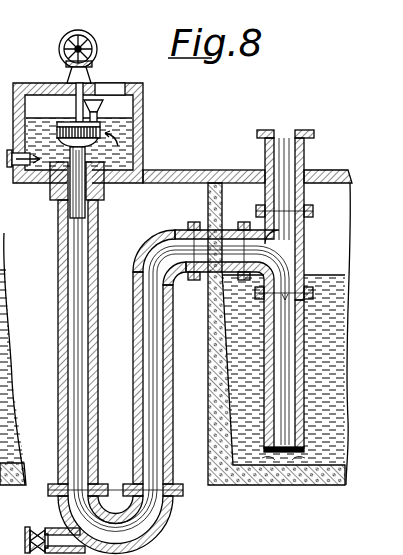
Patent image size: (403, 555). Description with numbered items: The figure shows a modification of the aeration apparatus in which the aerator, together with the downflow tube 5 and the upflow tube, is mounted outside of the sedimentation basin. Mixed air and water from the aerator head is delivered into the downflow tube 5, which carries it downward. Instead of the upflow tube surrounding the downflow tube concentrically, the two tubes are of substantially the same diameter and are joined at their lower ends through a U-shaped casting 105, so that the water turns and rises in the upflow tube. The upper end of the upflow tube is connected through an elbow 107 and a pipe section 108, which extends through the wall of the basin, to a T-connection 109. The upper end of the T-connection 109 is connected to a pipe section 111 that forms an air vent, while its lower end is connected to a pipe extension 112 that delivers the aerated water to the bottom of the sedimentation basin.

The downflow tube 5 is at (72, 202).
The U-shaped casting 105 is at (157, 535).
The elbow 107 is at (174, 236).
The pipe section 108 is at (228, 225).
The T-connection 109 is at (305, 245).
The pipe section 111 is at (307, 164).
The pipe extension 112 is at (304, 407).